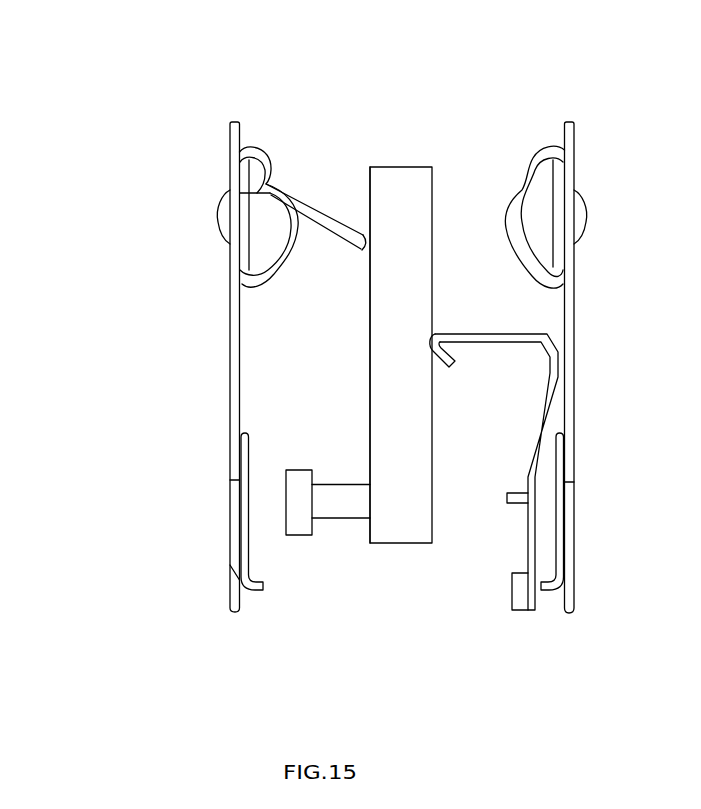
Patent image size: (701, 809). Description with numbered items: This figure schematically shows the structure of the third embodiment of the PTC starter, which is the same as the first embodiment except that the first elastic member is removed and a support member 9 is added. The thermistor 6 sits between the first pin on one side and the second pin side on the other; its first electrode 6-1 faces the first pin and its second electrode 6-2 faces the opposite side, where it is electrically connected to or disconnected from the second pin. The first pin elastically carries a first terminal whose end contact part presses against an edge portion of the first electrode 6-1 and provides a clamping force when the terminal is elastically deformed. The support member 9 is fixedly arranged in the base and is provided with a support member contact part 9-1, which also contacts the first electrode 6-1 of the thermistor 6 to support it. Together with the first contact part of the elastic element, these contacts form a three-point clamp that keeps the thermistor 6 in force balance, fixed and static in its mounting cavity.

The thermistor 6 is at (414, 218).
The first electrode 6-1 is at (369, 279).
The second electrode 6-2 is at (432, 268).
The support member 9 is at (300, 495).
The support member contact part 9-1 is at (363, 495).